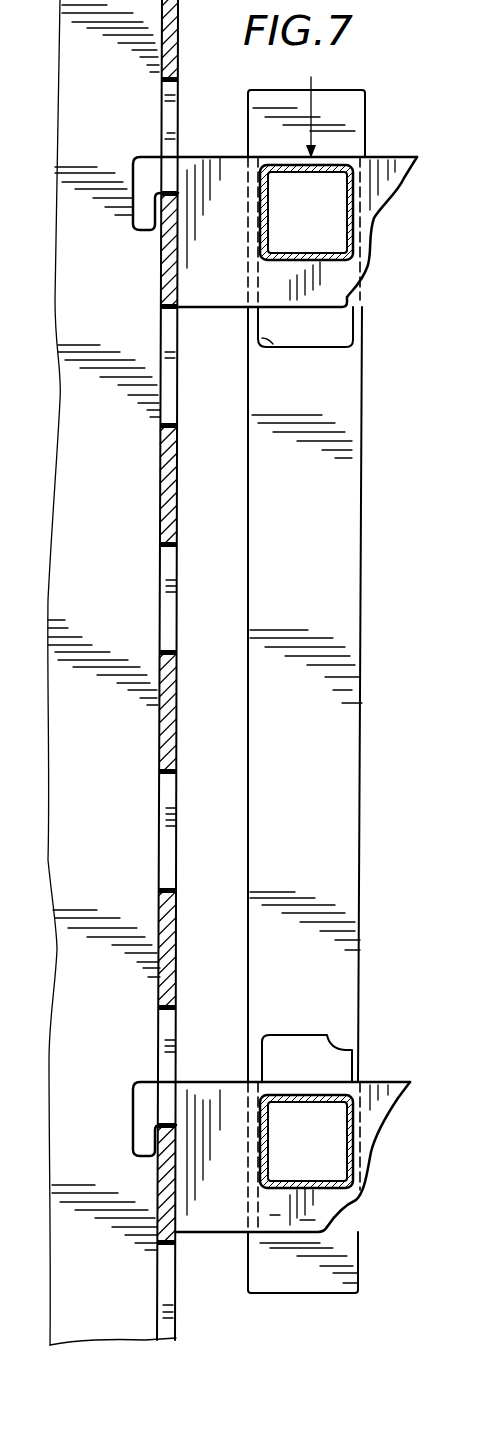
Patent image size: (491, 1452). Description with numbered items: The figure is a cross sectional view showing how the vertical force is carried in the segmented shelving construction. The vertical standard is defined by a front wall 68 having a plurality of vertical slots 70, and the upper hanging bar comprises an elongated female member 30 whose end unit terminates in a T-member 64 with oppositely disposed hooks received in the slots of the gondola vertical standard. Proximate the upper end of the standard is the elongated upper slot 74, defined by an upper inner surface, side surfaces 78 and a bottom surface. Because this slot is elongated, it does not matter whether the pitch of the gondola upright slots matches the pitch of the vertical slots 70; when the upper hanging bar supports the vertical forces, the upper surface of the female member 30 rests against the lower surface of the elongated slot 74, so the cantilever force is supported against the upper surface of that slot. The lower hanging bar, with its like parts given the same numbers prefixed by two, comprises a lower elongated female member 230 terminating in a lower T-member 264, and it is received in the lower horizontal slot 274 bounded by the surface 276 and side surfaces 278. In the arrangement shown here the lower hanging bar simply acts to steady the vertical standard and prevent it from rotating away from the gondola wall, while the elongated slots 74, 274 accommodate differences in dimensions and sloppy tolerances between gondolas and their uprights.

The elongated female member 30 is at (362, 197).
The T-member 64 is at (334, 283).
The elongated upper slot 74 is at (330, 330).
The side surfaces 78 is at (276, 344).
The front wall 68 is at (177, 722).
The vertical slots 70 is at (176, 803).
The lower horizontal slot 274 is at (292, 1048).
The surface 276 is at (330, 1048).
The T-member 264 is at (222, 1100).
The side surfaces 278 is at (345, 1205).
The elongated female member 230 is at (363, 1122).